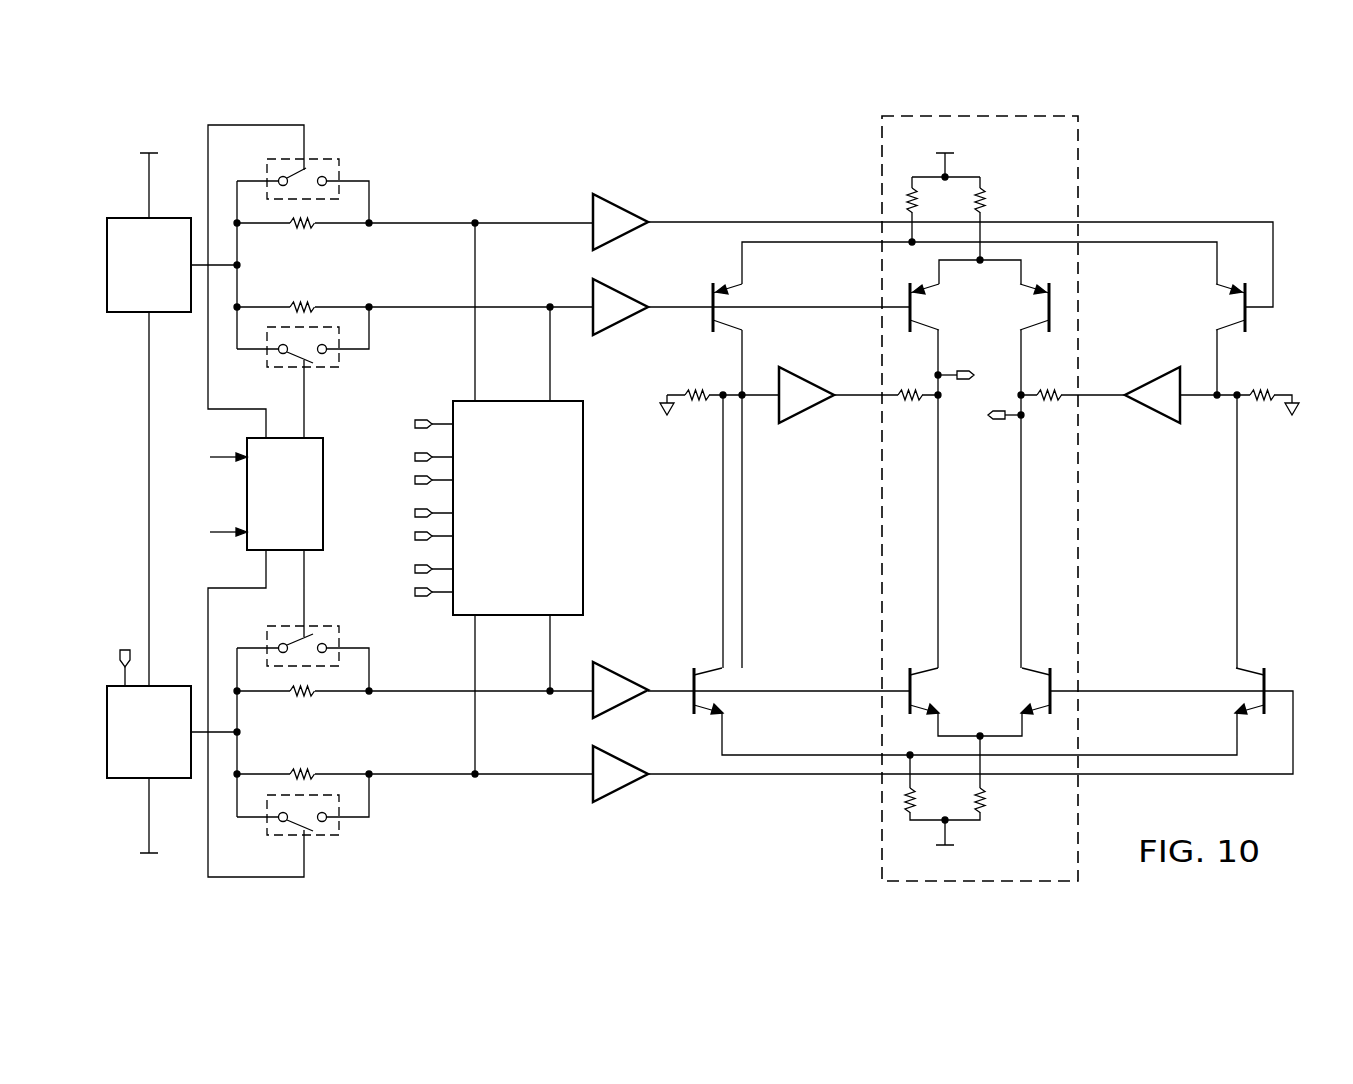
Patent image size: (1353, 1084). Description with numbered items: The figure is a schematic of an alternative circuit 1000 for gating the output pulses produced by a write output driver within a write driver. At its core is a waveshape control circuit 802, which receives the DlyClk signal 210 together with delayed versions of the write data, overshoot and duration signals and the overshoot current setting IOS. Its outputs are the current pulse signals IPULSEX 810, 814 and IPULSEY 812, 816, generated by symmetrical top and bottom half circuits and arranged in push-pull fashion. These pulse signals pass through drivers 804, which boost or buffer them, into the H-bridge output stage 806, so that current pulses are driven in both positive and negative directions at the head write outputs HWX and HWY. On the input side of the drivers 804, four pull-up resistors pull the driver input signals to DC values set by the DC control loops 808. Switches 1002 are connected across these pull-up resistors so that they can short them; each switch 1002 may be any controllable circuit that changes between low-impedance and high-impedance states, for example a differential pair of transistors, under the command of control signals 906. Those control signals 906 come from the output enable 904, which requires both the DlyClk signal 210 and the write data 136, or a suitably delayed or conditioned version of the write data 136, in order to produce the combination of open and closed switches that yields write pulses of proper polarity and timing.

The alternative circuit 1000 is at (1240, 174).
The DC control loop 808 is at (170, 217).
The control signal 906 is at (305, 139).
The switch 1002 is at (340, 165).
The output enable 904 is at (269, 533).
The write data 136 is at (220, 462).
The DlyClk signal 210 is at (223, 539).
The waveshape control circuit 802 is at (502, 583).
The IPULSEX current pulse signal 810 is at (477, 275).
The IPULSEY current pulse signal 812 is at (549, 364).
The IPULSEX current pulse signal 814 is at (475, 732).
The IPULSEY current pulse signal 816 is at (550, 632).
The driver 804 is at (640, 803).
The H-bridge output stage 806 is at (1083, 182).